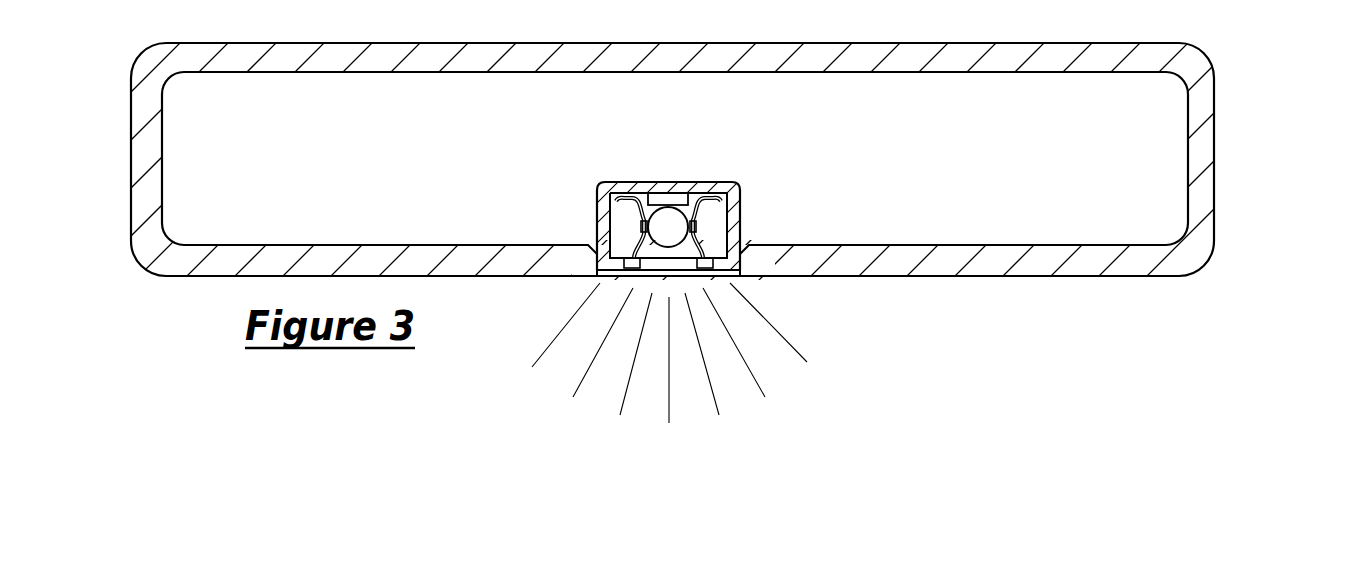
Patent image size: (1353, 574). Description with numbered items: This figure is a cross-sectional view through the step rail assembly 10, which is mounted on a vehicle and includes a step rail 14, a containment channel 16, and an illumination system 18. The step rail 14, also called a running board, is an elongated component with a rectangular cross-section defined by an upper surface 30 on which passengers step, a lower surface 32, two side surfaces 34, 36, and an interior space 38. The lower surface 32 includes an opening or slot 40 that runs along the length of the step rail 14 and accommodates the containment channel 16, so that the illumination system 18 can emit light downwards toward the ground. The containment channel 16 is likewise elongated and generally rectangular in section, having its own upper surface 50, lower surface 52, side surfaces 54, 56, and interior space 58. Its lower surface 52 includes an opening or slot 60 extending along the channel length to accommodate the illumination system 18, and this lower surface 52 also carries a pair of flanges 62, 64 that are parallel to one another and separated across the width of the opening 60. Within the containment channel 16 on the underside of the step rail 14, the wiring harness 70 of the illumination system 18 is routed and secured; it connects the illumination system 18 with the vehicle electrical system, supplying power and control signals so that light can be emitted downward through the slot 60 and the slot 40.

The step rail assembly 10 is at (1243, 48).
The step rail 14 is at (1198, 252).
The containment channel 16 is at (733, 184).
The illumination system 18 is at (626, 214).
The upper surface 30 is at (265, 42).
The lower surface 32 is at (210, 265).
The side surface 34 is at (1216, 156).
The side surface 36 is at (131, 160).
The interior space 38 is at (238, 133).
The opening or slot 40 is at (603, 280).
The upper surface 50 is at (705, 186).
The lower surface 52 is at (722, 280).
The side surface 54 is at (741, 233).
The side surface 56 is at (609, 231).
The interior space 58 is at (708, 229).
The opening or slot 60 is at (648, 277).
The flange 62 is at (718, 275).
The flange 64 is at (615, 275).
The wiring harness 70 is at (670, 196).